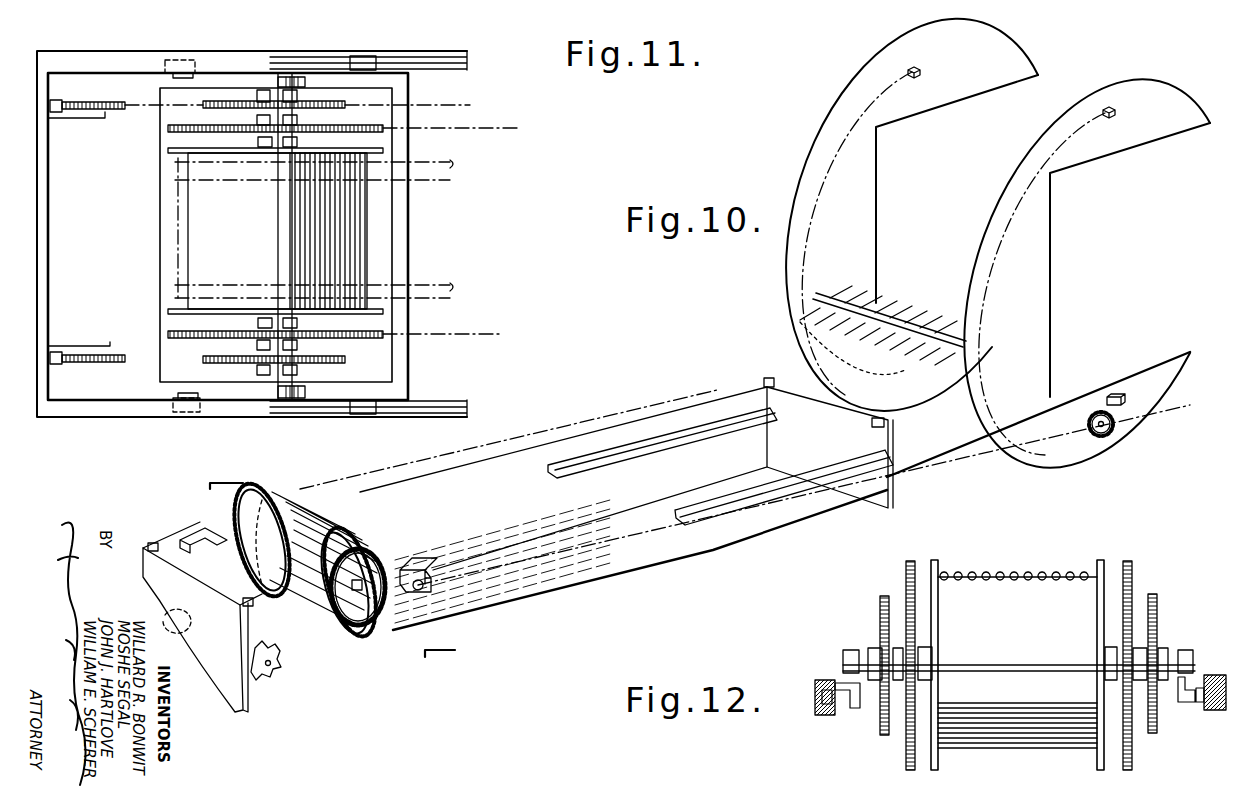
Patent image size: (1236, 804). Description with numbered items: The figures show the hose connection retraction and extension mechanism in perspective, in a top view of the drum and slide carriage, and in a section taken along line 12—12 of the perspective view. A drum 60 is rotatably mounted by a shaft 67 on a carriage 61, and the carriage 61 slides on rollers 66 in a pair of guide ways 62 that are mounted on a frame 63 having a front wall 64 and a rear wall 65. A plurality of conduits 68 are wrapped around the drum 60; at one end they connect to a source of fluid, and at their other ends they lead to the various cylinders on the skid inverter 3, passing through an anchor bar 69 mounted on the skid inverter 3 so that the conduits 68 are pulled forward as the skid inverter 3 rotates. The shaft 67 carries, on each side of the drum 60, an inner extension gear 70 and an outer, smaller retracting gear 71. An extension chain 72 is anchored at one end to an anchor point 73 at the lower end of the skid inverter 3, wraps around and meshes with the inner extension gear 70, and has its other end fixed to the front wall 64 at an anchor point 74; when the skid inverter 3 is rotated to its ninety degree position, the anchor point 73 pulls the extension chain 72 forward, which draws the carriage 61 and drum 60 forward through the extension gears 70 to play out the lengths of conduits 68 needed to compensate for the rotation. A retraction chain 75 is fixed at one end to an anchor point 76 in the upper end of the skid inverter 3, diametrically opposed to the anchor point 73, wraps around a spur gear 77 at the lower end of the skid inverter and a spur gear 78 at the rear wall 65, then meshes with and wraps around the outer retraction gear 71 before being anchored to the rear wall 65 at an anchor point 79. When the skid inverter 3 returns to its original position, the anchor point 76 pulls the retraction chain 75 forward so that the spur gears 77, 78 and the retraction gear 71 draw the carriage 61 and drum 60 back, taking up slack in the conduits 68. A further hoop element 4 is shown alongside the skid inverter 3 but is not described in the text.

In FIG. 10, the skid inverter 3 is at (830, 116).
In FIG. 10, the cylindrical hoop section 4 is at (869, 75).
In FIG. 10, the section line 12 is at (343, 560).
In FIG. 11, the drum 60 is at (355, 245).
In FIG. 10, the drum 60 is at (300, 520).
In FIG. 12, the drum 60 is at (1030, 585).
In FIG. 11, the carriage 61 is at (408, 252).
In FIG. 10, the carriage 61 is at (345, 530).
In FIG. 12, the carriage 61 is at (1192, 650).
In FIG. 11, the guide ways 62 is at (432, 58).
In FIG. 10, the guide ways 62 is at (640, 440).
In FIG. 12, the guide ways 62 is at (819, 715).
In FIG. 10, the frame 63 is at (603, 425).
In FIG. 10, the front wall 64 is at (862, 497).
In FIG. 11, the rear wall 65 is at (48, 192).
In FIG. 10, the rear wall 65 is at (216, 685).
In FIG. 11, the rollers 66 is at (190, 60).
In FIG. 10, the rollers 66 is at (417, 590).
In FIG. 12, the rollers 66 is at (828, 685).
In FIG. 11, the shaft 67 is at (275, 108).
In FIG. 10, the shaft 67 is at (362, 595).
In FIG. 12, the shaft 67 is at (1176, 655).
In FIG. 11, the conduits 68 is at (165, 260).
In FIG. 10, the conduits 68 is at (800, 322).
In FIG. 12, the conduits 68 is at (958, 572).
In FIG. 10, the anchor bar 69 is at (828, 292).
In FIG. 11, the inner extension gear 70 is at (350, 132).
In FIG. 10, the inner extension gear 70 is at (267, 496).
In FIG. 12, the inner extension gear 70 is at (906, 578).
In FIG. 11, the outer retracting gear 71 is at (322, 101).
In FIG. 10, the outer retracting gear 71 is at (348, 620).
In FIG. 12, the outer retracting gear 71 is at (880, 605).
In FIG. 11, the extension chain 72 is at (530, 126).
In FIG. 10, the extension chain 72 is at (688, 393).
In FIG. 10, the anchor point 73 is at (1115, 396).
In FIG. 10, the anchor point 74 is at (765, 378).
In FIG. 11, the retraction chain 75 is at (505, 78).
In FIG. 10, the retraction chain 75 is at (825, 177).
In FIG. 10, the anchor point 76 is at (920, 68).
In FIG. 10, the spur gear 77 is at (1114, 426).
In FIG. 11, the spur gear 78 is at (103, 102).
In FIG. 10, the spur gear 78 is at (172, 628).
In FIG. 11, the anchor point 79 is at (58, 100).
In FIG. 10, the anchor point 79 is at (155, 543).